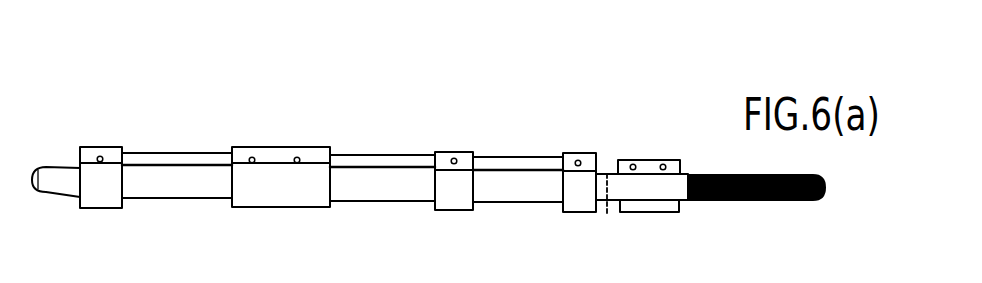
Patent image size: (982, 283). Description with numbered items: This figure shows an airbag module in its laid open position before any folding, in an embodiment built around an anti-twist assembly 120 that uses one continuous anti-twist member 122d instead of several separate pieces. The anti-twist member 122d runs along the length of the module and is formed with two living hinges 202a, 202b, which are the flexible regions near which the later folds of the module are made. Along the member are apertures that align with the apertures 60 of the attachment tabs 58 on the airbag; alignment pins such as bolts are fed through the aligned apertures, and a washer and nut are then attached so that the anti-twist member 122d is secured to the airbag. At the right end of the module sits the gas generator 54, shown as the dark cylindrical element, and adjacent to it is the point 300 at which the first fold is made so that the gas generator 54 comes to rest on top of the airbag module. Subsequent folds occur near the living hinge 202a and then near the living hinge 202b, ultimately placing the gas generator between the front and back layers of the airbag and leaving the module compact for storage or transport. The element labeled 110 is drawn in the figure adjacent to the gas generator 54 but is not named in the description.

The attachment tab 58 is at (93, 146).
The aperture 60 is at (103, 156).
The living hinge 202b is at (177, 157).
The anti-twist assembly 120 is at (330, 154).
The living hinge 202a is at (379, 155).
The anti-twist member 122d is at (513, 155).
The fold point 300 is at (607, 214).
The connector block 110 is at (675, 212).
The gas generator 54 is at (768, 201).